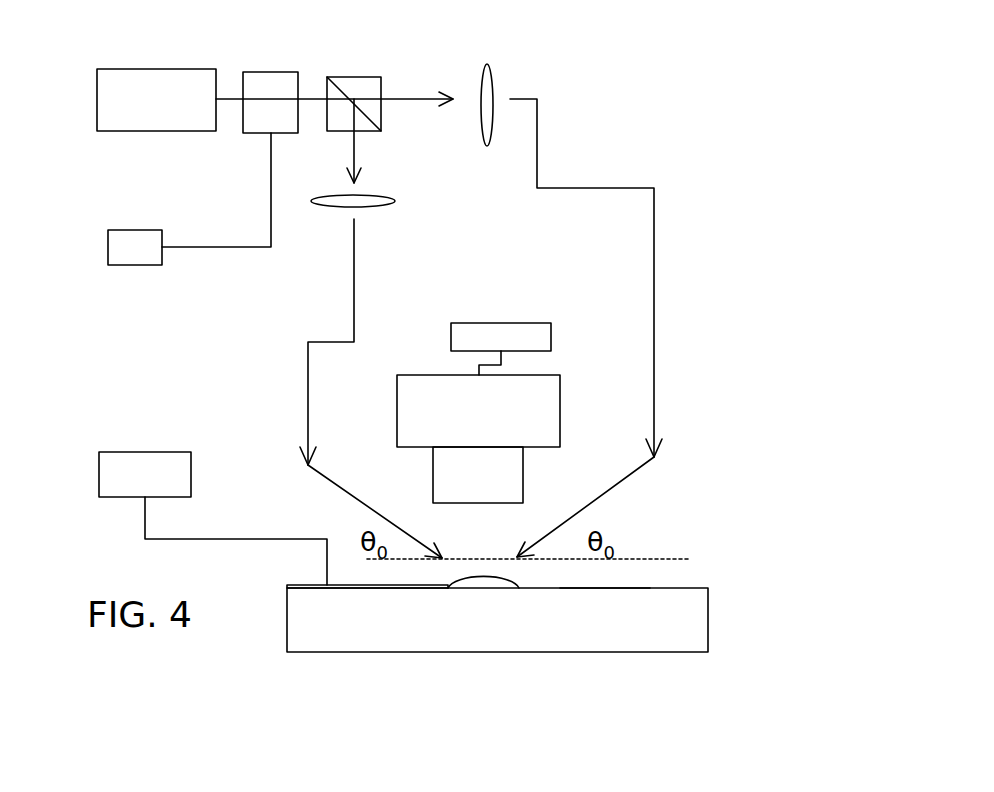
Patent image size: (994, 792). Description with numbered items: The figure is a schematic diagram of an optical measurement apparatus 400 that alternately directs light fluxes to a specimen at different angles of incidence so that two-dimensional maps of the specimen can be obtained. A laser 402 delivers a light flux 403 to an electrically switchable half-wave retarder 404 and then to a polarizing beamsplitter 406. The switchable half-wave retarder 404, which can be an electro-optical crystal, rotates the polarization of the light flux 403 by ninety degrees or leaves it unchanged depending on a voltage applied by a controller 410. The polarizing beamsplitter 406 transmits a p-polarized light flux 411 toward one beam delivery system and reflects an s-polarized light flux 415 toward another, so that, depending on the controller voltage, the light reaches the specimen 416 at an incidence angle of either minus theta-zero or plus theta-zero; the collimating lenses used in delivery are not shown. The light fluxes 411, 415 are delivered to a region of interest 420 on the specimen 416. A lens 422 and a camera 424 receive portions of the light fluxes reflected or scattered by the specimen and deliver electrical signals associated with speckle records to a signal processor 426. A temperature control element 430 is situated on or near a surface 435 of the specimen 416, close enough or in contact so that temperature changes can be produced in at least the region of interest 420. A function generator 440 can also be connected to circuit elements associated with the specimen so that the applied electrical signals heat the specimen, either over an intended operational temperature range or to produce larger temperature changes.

The optical measurement apparatus 400 is at (677, 135).
The laser 402 is at (125, 131).
The light flux 403 is at (234, 99).
The electrically switchable half-wave retarder 404 is at (257, 133).
The polarizing beamsplitter 406 is at (355, 77).
The controller 410 is at (133, 265).
The p-polarized light flux 411 is at (656, 246).
The s-polarized light flux 415 is at (352, 265).
The specimen 416 is at (708, 618).
The region of interest 420 is at (465, 603).
The lens 422 is at (523, 476).
The camera 424 is at (437, 375).
The signal processor 426 is at (503, 323).
The temperature control element 430 is at (605, 588).
The surface 435 is at (667, 588).
The function generator 440 is at (145, 452).